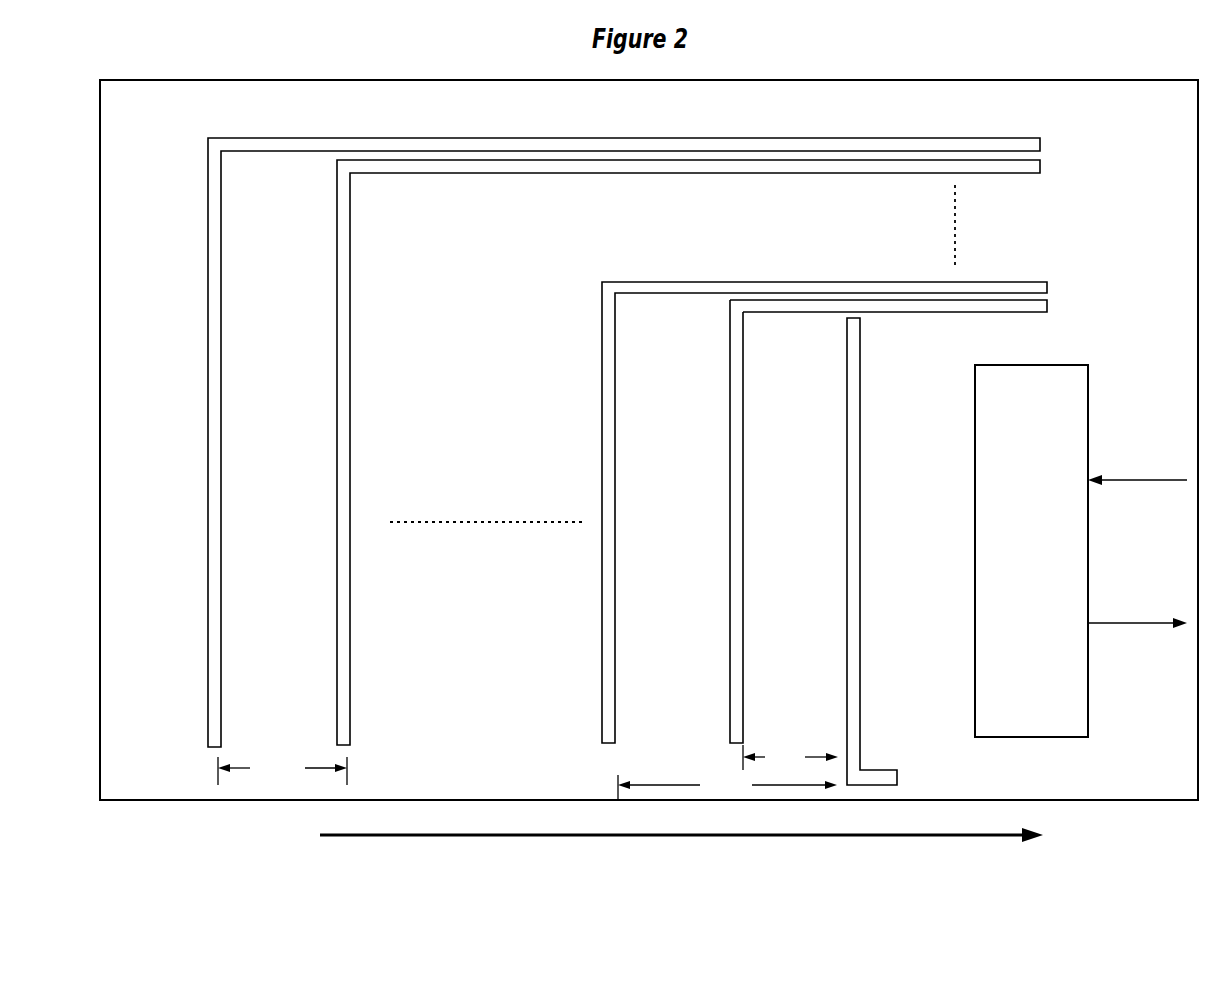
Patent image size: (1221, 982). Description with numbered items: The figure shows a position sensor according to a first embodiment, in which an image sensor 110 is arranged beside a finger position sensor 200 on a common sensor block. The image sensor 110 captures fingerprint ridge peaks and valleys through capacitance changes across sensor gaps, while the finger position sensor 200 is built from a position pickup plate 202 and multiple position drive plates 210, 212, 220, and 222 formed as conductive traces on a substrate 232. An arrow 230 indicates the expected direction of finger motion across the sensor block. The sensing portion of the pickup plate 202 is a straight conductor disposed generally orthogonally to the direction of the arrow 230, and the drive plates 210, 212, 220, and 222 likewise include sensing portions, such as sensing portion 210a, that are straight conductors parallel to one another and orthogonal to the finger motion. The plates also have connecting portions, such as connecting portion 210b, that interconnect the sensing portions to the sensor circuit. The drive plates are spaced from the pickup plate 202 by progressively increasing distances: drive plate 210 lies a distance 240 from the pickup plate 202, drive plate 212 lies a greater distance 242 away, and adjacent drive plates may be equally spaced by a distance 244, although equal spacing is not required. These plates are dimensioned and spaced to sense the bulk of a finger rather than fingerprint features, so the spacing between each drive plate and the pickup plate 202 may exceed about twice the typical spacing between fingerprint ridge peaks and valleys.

The image sensor 110 is at (1073, 360).
The finger position sensor 200 is at (476, 722).
The position pickup plate 202 is at (840, 508).
The position drive plate 210 is at (722, 414).
The sensing portion 210a is at (722, 551).
The connecting portion 210b is at (925, 325).
The position drive plate 212 is at (596, 408).
The position drive plate 220 is at (330, 337).
The position drive plate 222 is at (203, 253).
The arrow 230 is at (307, 834).
The substrate 232 is at (206, 80).
The distance 240 is at (790, 757).
The distance 242 is at (727, 787).
The distance 244 is at (282, 771).